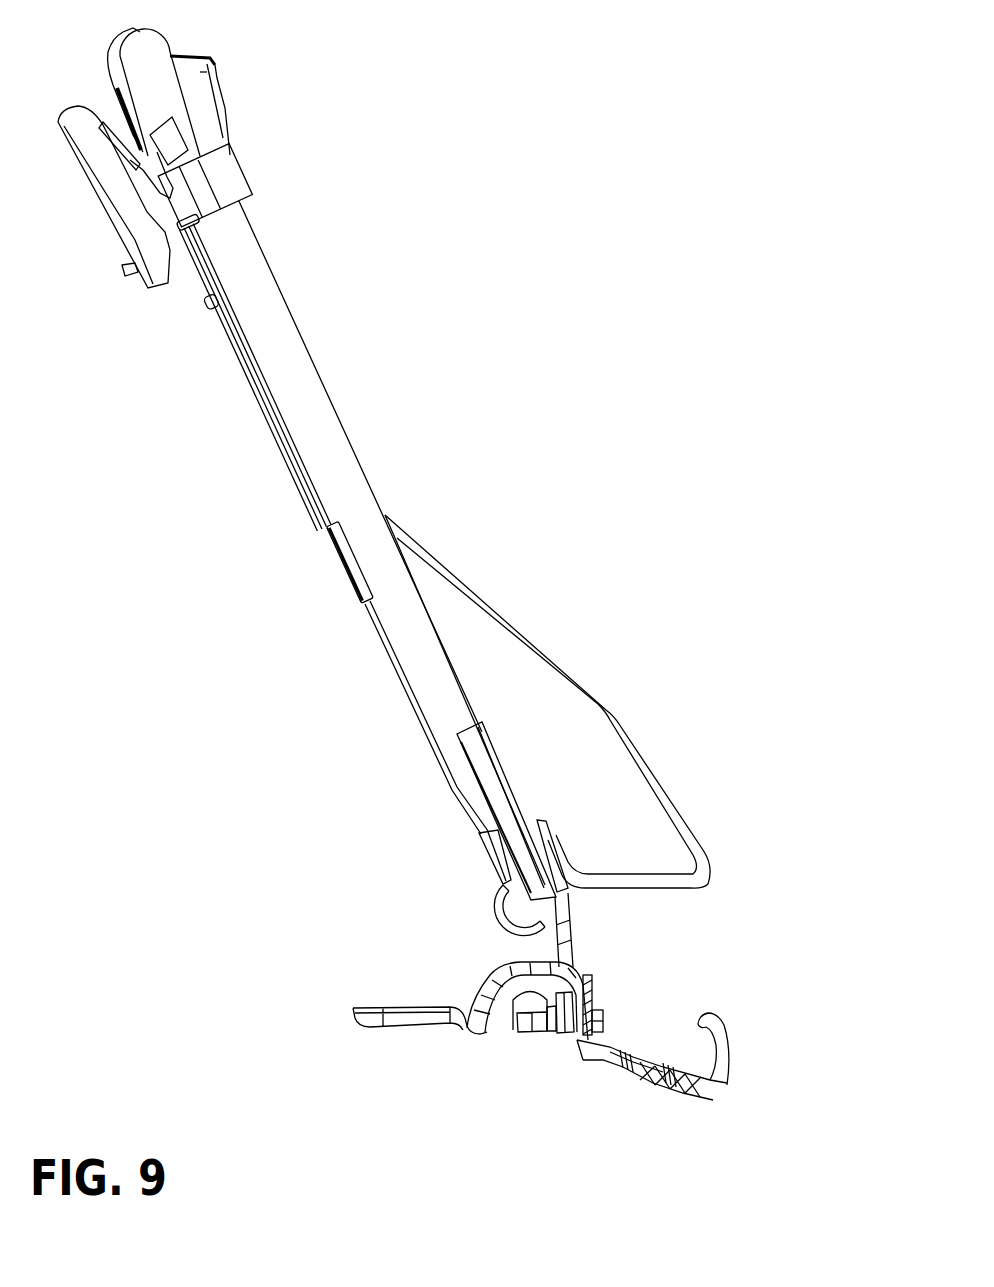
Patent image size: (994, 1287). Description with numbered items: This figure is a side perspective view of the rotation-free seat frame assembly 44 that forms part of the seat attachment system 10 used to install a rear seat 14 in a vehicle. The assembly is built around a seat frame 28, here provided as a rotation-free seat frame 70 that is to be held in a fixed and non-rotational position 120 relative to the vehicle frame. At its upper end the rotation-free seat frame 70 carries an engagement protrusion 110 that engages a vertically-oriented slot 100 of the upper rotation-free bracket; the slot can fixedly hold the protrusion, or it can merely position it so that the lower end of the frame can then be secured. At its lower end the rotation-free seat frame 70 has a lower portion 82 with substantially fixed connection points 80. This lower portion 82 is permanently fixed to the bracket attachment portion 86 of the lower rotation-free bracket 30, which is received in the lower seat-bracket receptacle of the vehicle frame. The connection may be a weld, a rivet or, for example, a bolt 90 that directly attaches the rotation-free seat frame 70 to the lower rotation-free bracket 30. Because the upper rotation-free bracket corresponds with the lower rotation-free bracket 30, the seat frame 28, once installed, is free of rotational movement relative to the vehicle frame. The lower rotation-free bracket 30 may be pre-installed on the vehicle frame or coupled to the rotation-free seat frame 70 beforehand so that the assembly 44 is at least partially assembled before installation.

The seat attachment system 10 is at (533, 211).
The rear seat 14 is at (424, 380).
The seat frame 28 is at (468, 562).
The lower rotation-free bracket 30 is at (418, 1025).
The rotation-free seat frame assembly 44 is at (298, 585).
The rotation-free seat frame 70 is at (427, 643).
The fixed connection points 80 is at (598, 986).
The lower portion 82 is at (553, 963).
The bracket attachment portion 86 is at (558, 1030).
The bolt 90 is at (603, 1018).
The vertically-oriented slot 100 is at (152, 128).
The engagement protrusion 110 is at (220, 147).
The fixed and non-rotational position 120 is at (386, 688).